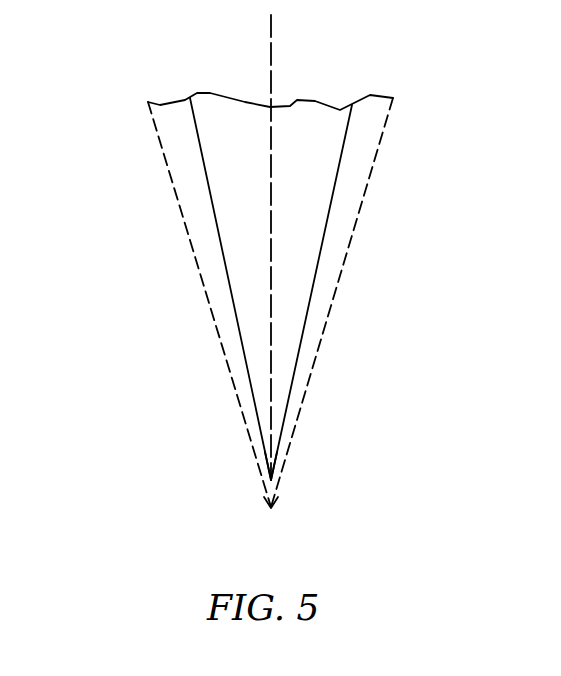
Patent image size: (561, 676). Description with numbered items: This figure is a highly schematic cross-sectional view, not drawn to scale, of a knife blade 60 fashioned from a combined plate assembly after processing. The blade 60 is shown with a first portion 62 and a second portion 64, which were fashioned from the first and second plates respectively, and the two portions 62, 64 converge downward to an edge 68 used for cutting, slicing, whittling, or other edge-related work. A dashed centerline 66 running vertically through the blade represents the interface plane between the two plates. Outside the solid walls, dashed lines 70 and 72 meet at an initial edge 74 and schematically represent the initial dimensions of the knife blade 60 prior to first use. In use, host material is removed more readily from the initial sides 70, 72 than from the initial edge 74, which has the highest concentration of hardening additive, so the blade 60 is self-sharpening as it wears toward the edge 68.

The knife blade 60 is at (362, 73).
The first portion 62 is at (243, 262).
The second portion 64 is at (300, 278).
The dashed line 66 is at (272, 48).
The edge 68 is at (249, 487).
The dashed line 70 is at (175, 205).
The dashed line 72 is at (366, 207).
The initial edge 74 is at (258, 508).